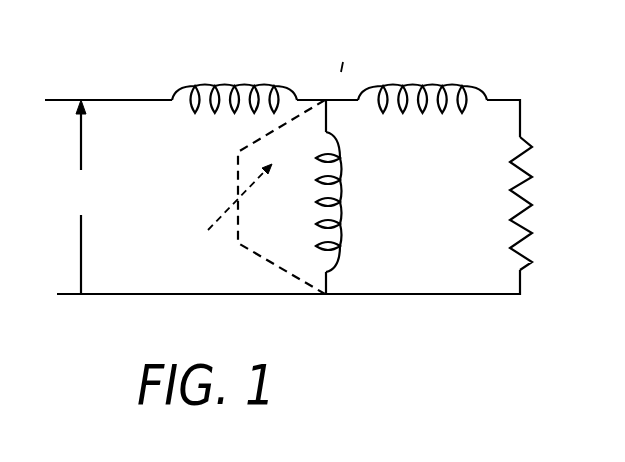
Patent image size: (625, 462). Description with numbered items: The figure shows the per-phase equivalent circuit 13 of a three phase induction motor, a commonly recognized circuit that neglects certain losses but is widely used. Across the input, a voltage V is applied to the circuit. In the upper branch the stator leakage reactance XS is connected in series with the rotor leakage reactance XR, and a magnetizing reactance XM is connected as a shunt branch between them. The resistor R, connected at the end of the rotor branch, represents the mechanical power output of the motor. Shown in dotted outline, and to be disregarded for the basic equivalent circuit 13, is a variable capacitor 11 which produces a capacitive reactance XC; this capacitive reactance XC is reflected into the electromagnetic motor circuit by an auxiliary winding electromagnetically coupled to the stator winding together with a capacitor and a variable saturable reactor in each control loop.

The variable capacitor 11 is at (198, 218).
The per-phase equivalent circuit 13 is at (74, 335).
The stator leakage reactance XS is at (234, 80).
The rotor leakage reactance XR is at (422, 80).
The magnetizing reactance XM is at (353, 197).
The capacitive reactance XC is at (237, 192).
The resistor R is at (540, 203).
The source voltage V is at (82, 197).